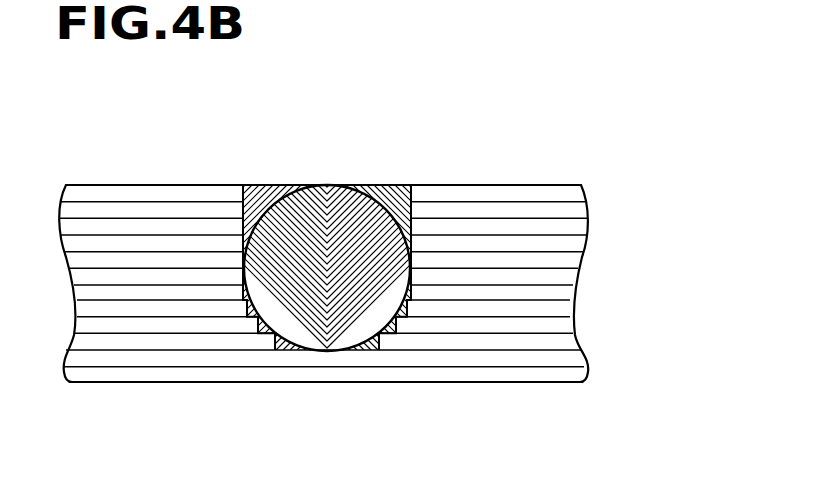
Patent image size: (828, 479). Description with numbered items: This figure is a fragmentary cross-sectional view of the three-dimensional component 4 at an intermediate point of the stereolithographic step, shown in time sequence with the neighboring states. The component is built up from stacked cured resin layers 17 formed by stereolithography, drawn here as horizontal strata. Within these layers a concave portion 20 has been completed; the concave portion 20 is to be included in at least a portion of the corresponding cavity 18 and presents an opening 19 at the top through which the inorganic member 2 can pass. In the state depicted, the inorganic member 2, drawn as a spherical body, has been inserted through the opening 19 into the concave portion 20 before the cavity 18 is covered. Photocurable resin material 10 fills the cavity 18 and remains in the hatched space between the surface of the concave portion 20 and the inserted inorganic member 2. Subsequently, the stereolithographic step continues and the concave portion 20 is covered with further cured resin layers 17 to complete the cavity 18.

The three-dimensional component 4 is at (96, 180).
The photocurable resin material 10 is at (238, 213).
The cavity 18 is at (270, 172).
The opening 19 is at (285, 182).
The inorganic member 2 is at (332, 223).
The concave portion 20 is at (395, 182).
The cured resin layer 17 is at (567, 290).